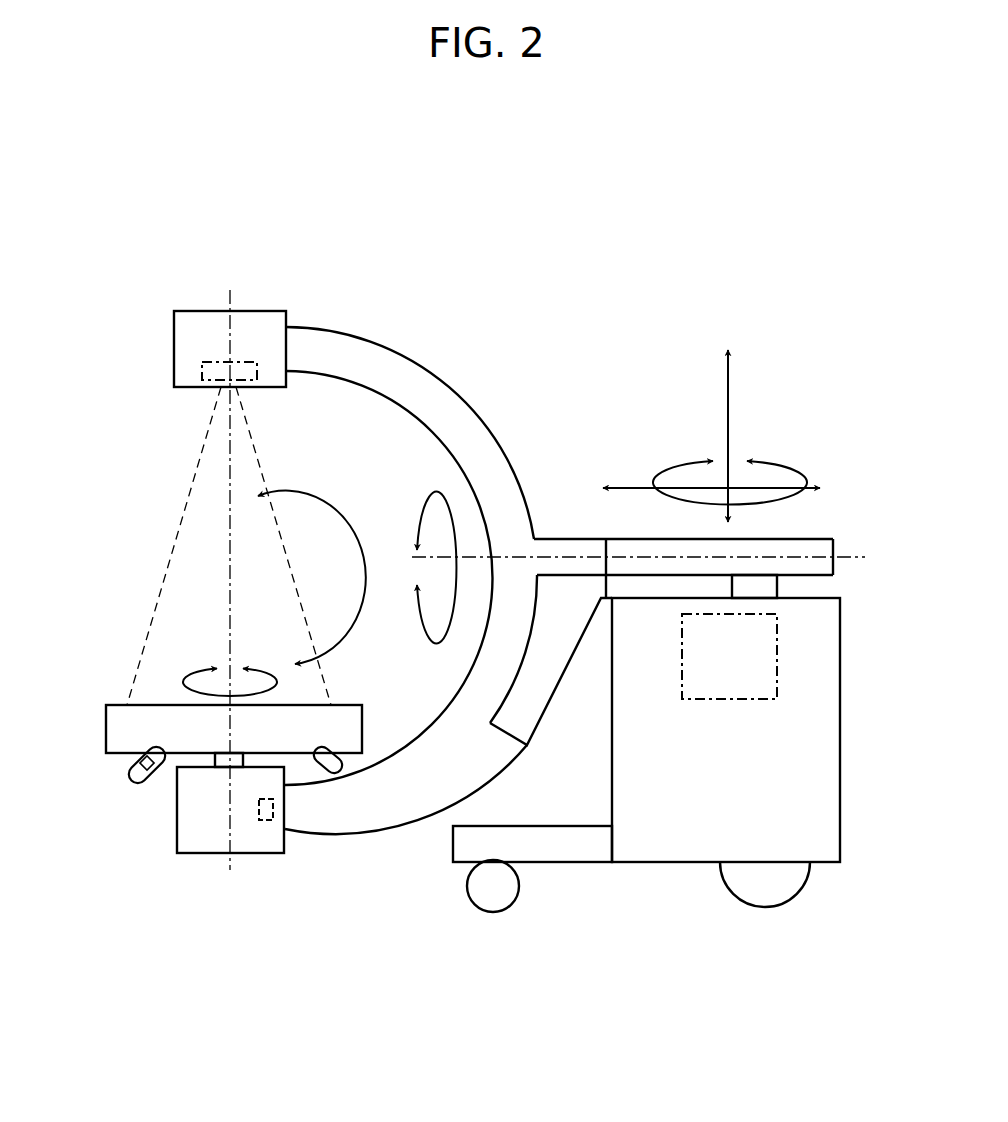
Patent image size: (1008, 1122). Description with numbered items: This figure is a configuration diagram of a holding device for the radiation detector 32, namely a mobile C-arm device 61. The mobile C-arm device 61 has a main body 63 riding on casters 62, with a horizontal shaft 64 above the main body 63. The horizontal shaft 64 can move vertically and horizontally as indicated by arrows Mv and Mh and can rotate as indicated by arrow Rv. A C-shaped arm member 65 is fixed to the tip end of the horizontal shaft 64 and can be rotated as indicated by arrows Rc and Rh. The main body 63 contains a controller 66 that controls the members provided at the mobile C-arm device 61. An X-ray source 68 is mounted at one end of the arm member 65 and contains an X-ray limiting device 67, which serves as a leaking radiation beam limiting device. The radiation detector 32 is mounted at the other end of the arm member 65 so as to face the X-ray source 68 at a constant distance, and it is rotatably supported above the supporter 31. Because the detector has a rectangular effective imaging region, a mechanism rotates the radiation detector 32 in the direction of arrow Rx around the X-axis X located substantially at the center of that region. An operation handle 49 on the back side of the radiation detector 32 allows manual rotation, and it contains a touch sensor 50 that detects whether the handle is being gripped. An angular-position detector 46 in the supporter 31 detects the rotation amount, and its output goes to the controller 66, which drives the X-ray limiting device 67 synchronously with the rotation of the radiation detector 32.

The supporter 31 is at (198, 842).
The radiation detector 32 is at (117, 725).
The angular-position detector 46 is at (266, 820).
The operation handle 49 is at (135, 783).
The touch sensor 50 is at (135, 758).
The mobile C-arm device 61 is at (836, 465).
The casters 62 is at (770, 895).
The main body 63 is at (830, 792).
The horizontal shaft 64 is at (805, 548).
The arm member 65 is at (393, 362).
The controller 66 is at (762, 662).
The X-ray limiting device 67 is at (210, 372).
The X-ray source 68 is at (192, 338).
The X-axis X is at (230, 540).
The arrow Rc is at (310, 492).
The arrow Rh is at (418, 512).
The arrow Rx is at (183, 672).
The arrow Mv is at (726, 390).
The arrow Mh is at (620, 485).
The arrow Rv is at (784, 426).